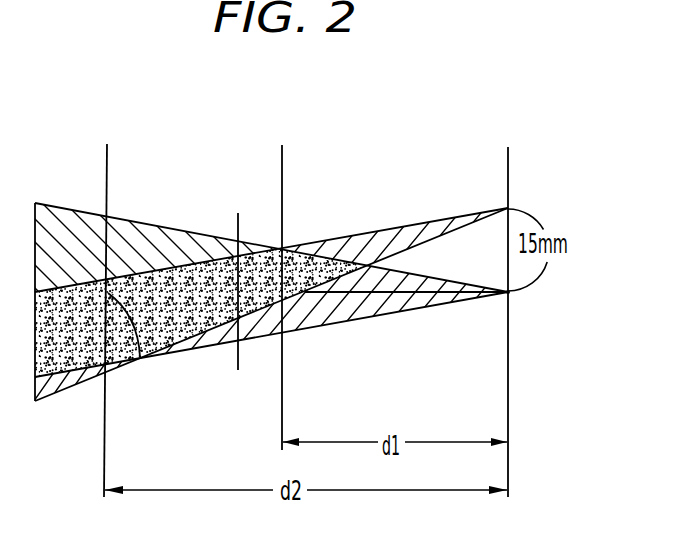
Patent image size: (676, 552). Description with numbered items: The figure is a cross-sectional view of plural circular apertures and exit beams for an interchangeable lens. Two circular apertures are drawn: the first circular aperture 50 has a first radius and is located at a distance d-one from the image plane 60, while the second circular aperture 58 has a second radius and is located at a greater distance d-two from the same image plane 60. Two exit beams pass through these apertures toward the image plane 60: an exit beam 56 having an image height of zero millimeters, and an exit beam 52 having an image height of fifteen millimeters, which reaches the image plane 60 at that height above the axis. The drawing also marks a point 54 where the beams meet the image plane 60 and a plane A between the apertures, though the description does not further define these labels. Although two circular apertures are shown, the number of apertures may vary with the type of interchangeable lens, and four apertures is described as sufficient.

The circular aperture 1 50 is at (134, 198).
The exit beam 52 is at (362, 240).
The focal point / convergence point 54 is at (510, 292).
The exit beam 56 is at (295, 323).
The circular aperture 2 58 is at (140, 357).
The image plane 60 is at (508, 352).
The plane A is at (238, 350).